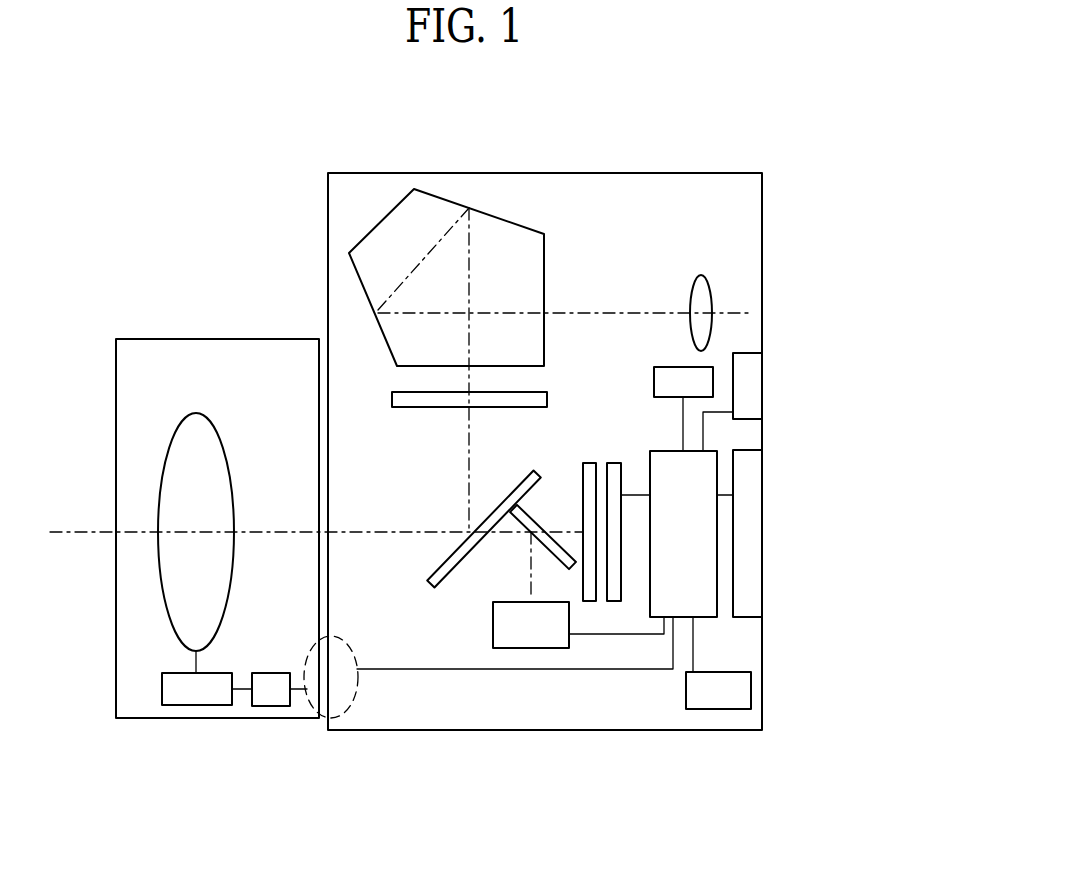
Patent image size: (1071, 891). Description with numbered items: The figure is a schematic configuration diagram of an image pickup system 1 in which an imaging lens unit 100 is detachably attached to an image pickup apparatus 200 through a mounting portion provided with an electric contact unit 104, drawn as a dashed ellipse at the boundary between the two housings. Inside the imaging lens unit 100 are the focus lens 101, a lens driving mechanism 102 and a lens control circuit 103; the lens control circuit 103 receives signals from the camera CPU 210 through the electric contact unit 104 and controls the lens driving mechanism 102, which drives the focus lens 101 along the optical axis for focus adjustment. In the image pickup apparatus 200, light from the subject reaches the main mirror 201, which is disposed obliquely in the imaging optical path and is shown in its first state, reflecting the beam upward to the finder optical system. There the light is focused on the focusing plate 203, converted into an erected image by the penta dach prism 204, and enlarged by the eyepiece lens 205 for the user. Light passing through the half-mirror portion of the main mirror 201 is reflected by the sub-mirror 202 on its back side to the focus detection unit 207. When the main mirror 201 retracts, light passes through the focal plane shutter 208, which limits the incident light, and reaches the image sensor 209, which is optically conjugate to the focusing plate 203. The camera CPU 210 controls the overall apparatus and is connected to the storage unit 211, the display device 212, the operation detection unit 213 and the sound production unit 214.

The image pickup system 1 is at (111, 75).
The imaging lens unit 100 is at (116, 428).
The focus lens 101 is at (196, 413).
The lens driving mechanism 102 is at (197, 705).
The lens control circuit 103 is at (270, 706).
The electric contact unit 104 is at (348, 707).
The image pickup apparatus 200 is at (420, 173).
The main mirror 201 is at (427, 577).
The sub-mirror 202 is at (542, 527).
The focusing plate 203 is at (397, 392).
The penta dach prism 204 is at (490, 213).
The eyepiece lens 205 is at (697, 280).
The focus detection unit 207 is at (527, 648).
The focal plane shutter 208 is at (591, 463).
The image sensor 209 is at (613, 463).
The camera CPU 210 is at (700, 619).
The storage unit 211 is at (743, 693).
The display device 212 is at (757, 537).
The operation detection unit 213 is at (755, 385).
The sound production unit 214 is at (706, 367).